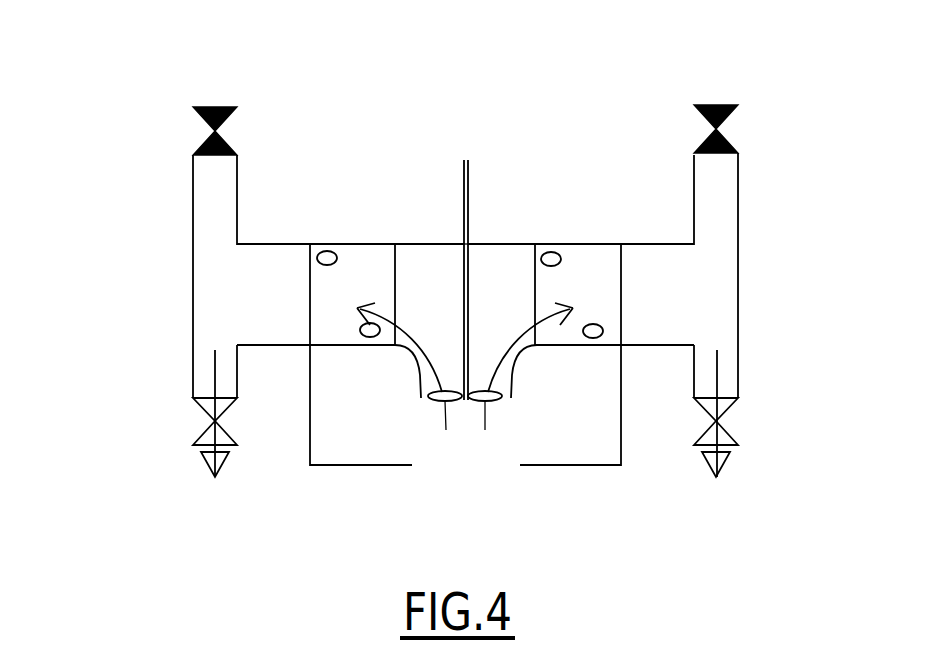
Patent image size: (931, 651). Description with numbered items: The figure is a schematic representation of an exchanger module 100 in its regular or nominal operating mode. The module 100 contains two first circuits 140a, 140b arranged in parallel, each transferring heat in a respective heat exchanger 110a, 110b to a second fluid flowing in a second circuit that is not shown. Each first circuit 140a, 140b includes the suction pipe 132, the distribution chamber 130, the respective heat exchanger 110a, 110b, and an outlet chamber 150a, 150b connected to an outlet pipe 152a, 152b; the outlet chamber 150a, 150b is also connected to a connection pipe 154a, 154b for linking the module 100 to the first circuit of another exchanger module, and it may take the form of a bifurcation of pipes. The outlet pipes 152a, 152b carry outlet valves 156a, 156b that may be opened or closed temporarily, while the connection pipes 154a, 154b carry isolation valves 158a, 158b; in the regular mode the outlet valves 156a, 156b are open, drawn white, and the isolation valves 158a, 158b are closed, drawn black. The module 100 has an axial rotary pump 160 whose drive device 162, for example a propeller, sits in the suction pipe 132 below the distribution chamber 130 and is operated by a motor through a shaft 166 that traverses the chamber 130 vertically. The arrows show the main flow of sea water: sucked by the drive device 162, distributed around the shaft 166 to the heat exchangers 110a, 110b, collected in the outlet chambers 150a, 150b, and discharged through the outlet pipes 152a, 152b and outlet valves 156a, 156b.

The exchanger module 100 is at (135, 250).
The heat exchanger 110a is at (352, 272).
The heat exchanger 110b is at (587, 268).
The distribution chamber 130 is at (497, 262).
The suction pipe 132 is at (513, 377).
The first circuit 140a is at (292, 202).
The first circuit 140b is at (678, 190).
The outlet chamber 150a is at (200, 297).
The outlet chamber 150b is at (736, 279).
The outlet pipe 152a is at (200, 370).
The outlet pipe 152b is at (730, 365).
The connection pipe 154a is at (200, 192).
The connection pipe 154b is at (738, 178).
The outlet valve 156a is at (197, 400).
The outlet valve 156b is at (733, 408).
The isolation valve 158a is at (197, 150).
The isolation valve 158b is at (720, 108).
The pump 160 is at (423, 150).
The drive device 162 is at (427, 399).
The shaft 166 is at (462, 267).